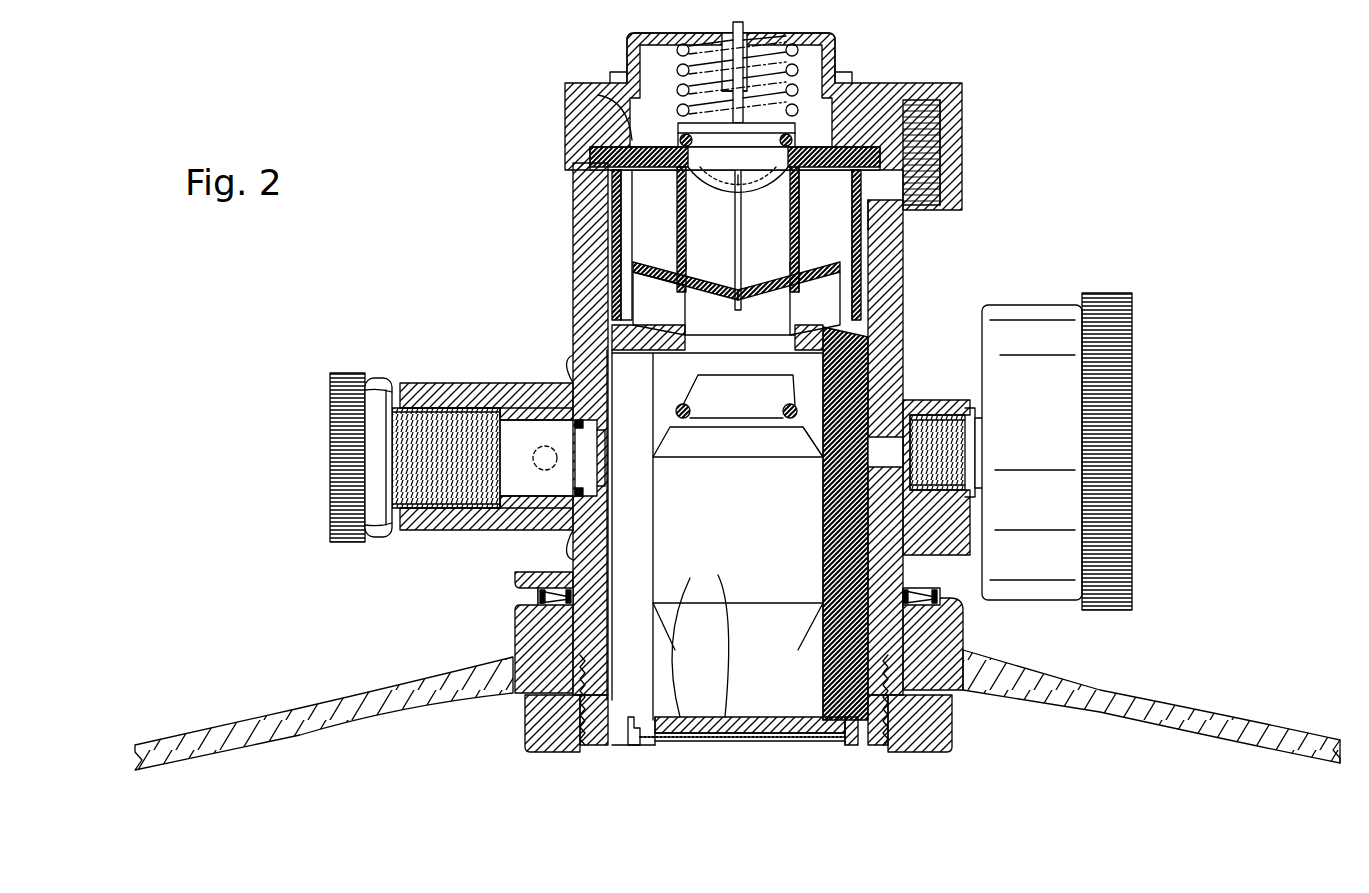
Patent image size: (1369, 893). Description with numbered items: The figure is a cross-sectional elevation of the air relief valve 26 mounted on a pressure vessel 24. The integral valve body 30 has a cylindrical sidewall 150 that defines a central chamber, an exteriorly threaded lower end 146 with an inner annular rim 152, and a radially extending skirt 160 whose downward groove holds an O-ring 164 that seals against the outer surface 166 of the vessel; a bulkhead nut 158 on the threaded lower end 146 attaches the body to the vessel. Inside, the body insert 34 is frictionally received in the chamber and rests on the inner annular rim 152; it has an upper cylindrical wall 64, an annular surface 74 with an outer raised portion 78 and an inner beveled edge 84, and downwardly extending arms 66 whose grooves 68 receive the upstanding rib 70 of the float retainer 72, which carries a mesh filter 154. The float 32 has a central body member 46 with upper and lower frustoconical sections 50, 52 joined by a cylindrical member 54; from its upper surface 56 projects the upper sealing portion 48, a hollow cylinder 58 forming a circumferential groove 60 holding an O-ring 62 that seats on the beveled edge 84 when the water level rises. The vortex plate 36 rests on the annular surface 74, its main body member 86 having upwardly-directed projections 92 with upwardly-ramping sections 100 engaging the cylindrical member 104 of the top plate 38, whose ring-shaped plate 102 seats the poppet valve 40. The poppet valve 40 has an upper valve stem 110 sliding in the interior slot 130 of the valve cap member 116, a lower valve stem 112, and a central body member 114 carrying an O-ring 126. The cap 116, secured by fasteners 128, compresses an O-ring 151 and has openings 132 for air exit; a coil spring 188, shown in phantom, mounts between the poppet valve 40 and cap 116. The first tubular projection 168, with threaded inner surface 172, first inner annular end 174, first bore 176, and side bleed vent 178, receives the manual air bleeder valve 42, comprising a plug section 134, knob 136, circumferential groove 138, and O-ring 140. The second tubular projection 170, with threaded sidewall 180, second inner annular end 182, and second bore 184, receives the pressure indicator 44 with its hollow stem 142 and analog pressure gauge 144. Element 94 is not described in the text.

The pressure vessel 24 is at (1190, 686).
The air relief valve 26 is at (1000, 127).
The integral valve body 30 is at (902, 260).
The float 32 is at (784, 735).
The body insert 34 is at (612, 242).
The vortex plate 36 is at (612, 202).
The top plate 38 is at (600, 156).
The poppet valve 40 is at (838, 95).
The manual air bleeder valve 42 is at (418, 405).
The pressure indicator 44 is at (1035, 310).
The central body member 46 is at (668, 742).
The upper sealing portion 48 is at (768, 378).
The upper frustoconical section 50 is at (705, 445).
The lower frustoconical section 52 is at (735, 735).
The cylindrical member 54 is at (692, 578).
The upper surface 56 is at (793, 408).
The hollow cylinder 58 is at (683, 403).
The circumferential groove 60 is at (738, 414).
The O-ring 62 is at (778, 445).
The upper cylindrical wall 64 is at (882, 240).
The downwardly extending arms 66 is at (658, 527).
The groove 68 is at (630, 716).
The upstanding rib 70 is at (622, 745).
The float retainer 72 is at (765, 742).
The annular surface 74 is at (648, 332).
The outer raised portion 78 is at (631, 280).
The inner beveled edge 84 is at (690, 350).
The main body member 86 is at (772, 278).
The upwardly-directed projections 92 is at (799, 258).
The right chamber 94 is at (800, 305).
The upwardly-ramping sections 100 is at (679, 215).
The ring-shaped plate 102 is at (598, 125).
The cylindrical member 104 is at (715, 266).
The upper valve stem 110 is at (690, 100).
The lower valve stem 112 is at (735, 220).
The central body member 114 is at (745, 218).
The valve cap member 116 is at (780, 33).
The O-ring 126 is at (800, 137).
The fasteners 128 is at (920, 100).
The interior slot 130 is at (742, 34).
The openings 132 is at (627, 66).
The plug section 134 is at (440, 510).
The handle or knob 136 is at (348, 546).
The circumferential groove 138 is at (585, 462).
The O-ring 140 is at (526, 420).
The hollow stem 142 is at (930, 494).
The analog pressure gauge 144 is at (1135, 500).
The threaded lower end 146 is at (525, 752).
The cylindrical sidewall 150 is at (580, 272).
The O-ring 151 is at (955, 168).
The inner annular rim 152 is at (868, 748).
The mesh filter 154 is at (675, 745).
The bulkhead nut 158 is at (950, 740).
The skirt 160 is at (948, 600).
The O-ring 164 is at (538, 596).
The outer surface 166 is at (530, 620).
The first tubular projection 168 is at (472, 400).
The second tubular projection 170 is at (960, 500).
The threaded inner surface 172 is at (456, 408).
The first inner annular end 174 is at (595, 500).
The first bore 176 is at (578, 398).
The side bleed vent 178 is at (375, 450).
The threaded sidewall 180 is at (978, 418).
The second inner annular end 182 is at (900, 416).
The second bore 184 is at (885, 460).
The coil spring 188 is at (700, 58).